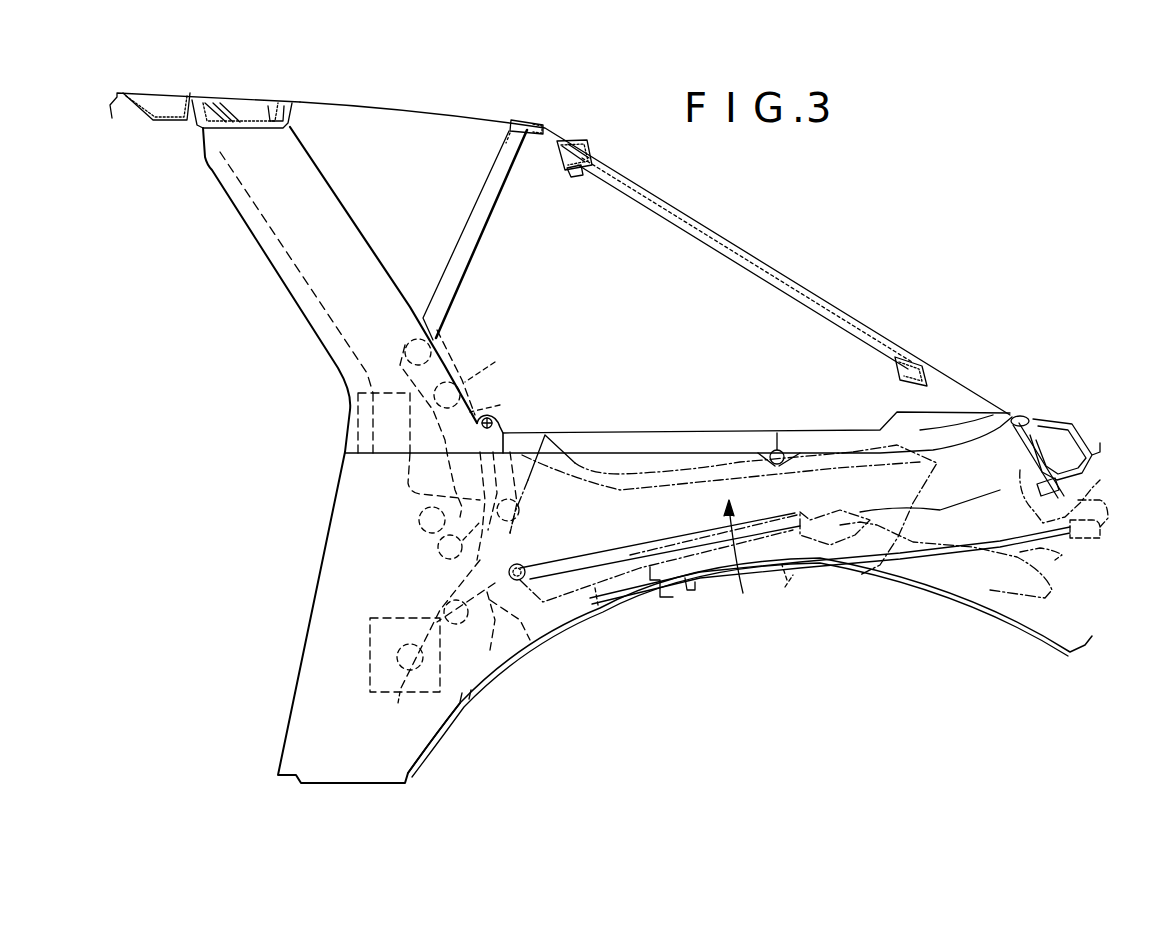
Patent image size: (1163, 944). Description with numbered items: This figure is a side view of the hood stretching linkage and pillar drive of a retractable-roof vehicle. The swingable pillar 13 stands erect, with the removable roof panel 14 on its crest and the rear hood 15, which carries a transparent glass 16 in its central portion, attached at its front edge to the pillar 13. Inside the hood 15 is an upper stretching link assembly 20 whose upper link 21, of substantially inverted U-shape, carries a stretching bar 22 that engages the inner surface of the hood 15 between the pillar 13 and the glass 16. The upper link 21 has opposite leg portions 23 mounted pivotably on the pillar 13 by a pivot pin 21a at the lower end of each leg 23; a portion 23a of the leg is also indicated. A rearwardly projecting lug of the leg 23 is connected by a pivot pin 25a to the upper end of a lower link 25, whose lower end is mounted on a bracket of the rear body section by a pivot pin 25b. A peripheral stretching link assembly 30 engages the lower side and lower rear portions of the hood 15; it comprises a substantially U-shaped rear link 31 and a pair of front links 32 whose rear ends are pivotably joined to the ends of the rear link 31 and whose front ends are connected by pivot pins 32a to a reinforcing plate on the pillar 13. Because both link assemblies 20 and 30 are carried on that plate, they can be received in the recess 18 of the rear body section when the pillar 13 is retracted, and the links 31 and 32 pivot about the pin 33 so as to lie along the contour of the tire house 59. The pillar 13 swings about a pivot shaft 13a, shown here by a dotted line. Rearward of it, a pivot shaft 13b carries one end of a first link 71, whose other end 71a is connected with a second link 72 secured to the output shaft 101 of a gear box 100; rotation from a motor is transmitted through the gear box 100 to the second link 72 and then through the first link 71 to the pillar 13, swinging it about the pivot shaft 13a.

The swingable pillar 13 is at (345, 248).
The pivot shaft 13a is at (419, 521).
The pivot shaft 13b is at (520, 512).
The roof panel 14 is at (163, 96).
The rear hood 15 is at (468, 110).
The transparent glass 16 is at (746, 250).
The recess 18 is at (737, 558).
The upper stretching link assembly 20 is at (473, 198).
The upper link 21 is at (480, 237).
The pivot pin 21a is at (447, 338).
The stretching bar 22 is at (538, 120).
The leg portion 23 is at (450, 360).
The reinforcement flange 23a is at (499, 364).
The lower link 25 is at (502, 404).
The pivot pin 25a is at (480, 394).
The pivot pin 25b is at (438, 550).
The peripheral stretching link assembly 30 is at (737, 424).
The rear link 31 is at (847, 425).
The front link 32 is at (673, 433).
The pivot pin 32a is at (498, 422).
The pin 33 is at (784, 432).
The tire house 59 is at (565, 634).
The first link 71 is at (492, 617).
The other end of first link 71a is at (443, 604).
The second link 72 is at (428, 654).
The gear box 100 is at (368, 664).
The output shaft 101 is at (395, 705).